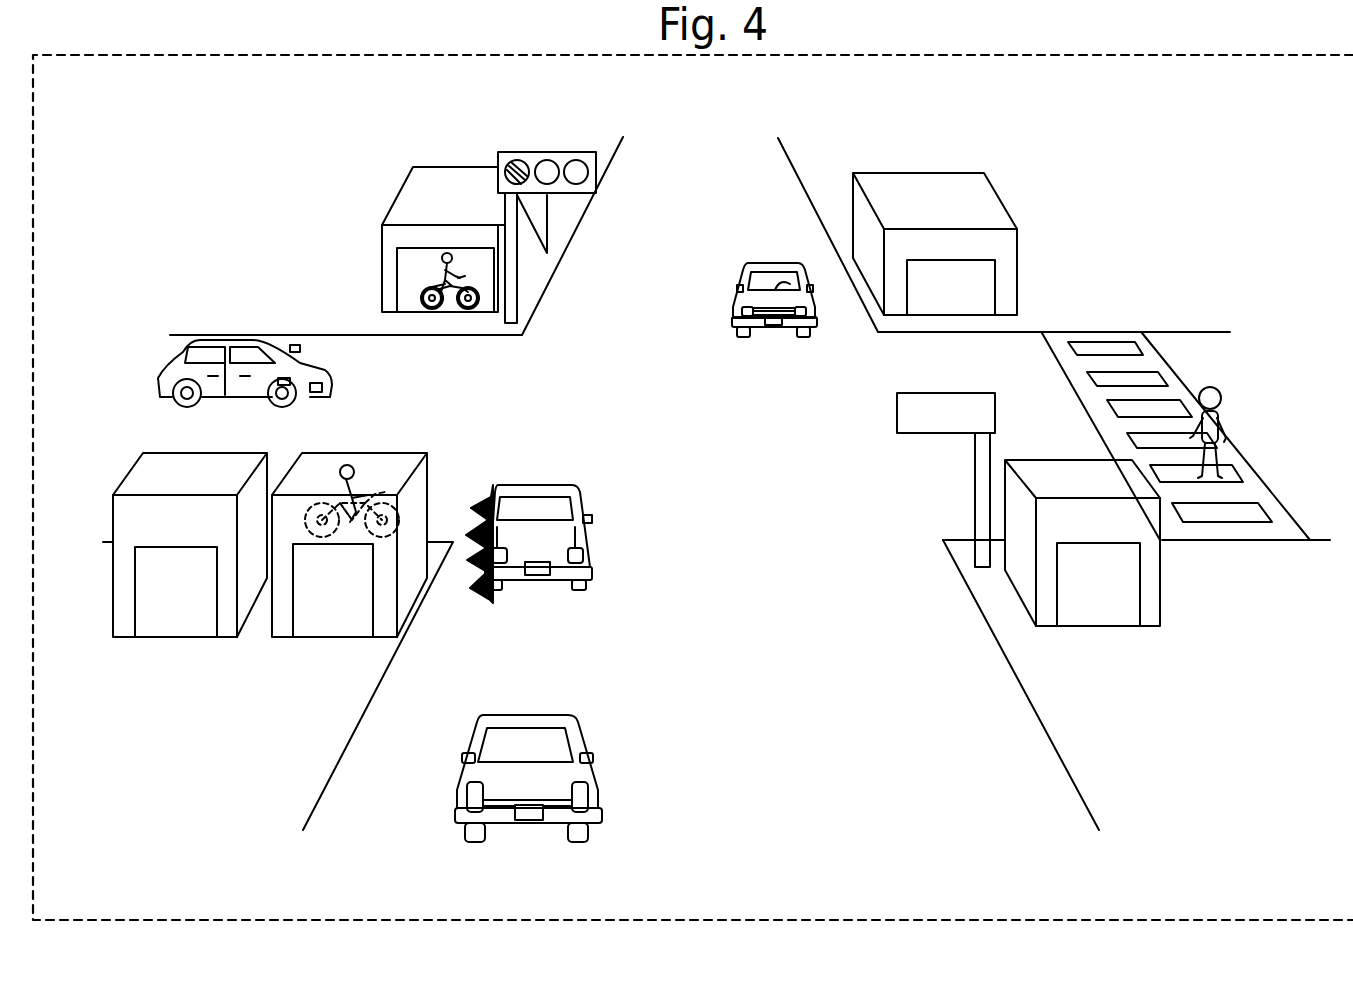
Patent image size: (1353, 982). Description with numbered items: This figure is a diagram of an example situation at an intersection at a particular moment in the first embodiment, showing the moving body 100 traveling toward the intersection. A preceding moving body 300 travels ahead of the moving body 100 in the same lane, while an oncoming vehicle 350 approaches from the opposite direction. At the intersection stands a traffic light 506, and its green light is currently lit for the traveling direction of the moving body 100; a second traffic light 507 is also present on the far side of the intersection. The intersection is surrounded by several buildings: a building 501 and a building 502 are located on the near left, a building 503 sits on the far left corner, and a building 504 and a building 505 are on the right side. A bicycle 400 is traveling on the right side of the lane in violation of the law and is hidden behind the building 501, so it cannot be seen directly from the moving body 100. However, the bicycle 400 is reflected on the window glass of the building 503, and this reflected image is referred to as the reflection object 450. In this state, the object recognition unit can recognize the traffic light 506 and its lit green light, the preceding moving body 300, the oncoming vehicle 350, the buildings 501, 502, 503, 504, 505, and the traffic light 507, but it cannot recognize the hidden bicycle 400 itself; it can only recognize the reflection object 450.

The moving body 100 is at (518, 825).
The preceding moving body 300 is at (517, 583).
The oncoming vehicle 350 is at (747, 265).
The bicycle 400 is at (350, 465).
The reflection object 450 is at (500, 350).
The building 501 is at (337, 664).
The building 502 is at (145, 637).
The building 503 is at (393, 212).
The building 504 is at (1083, 622).
The building 505 is at (955, 178).
The traffic light 506 is at (543, 152).
The traffic light 507 is at (980, 400).